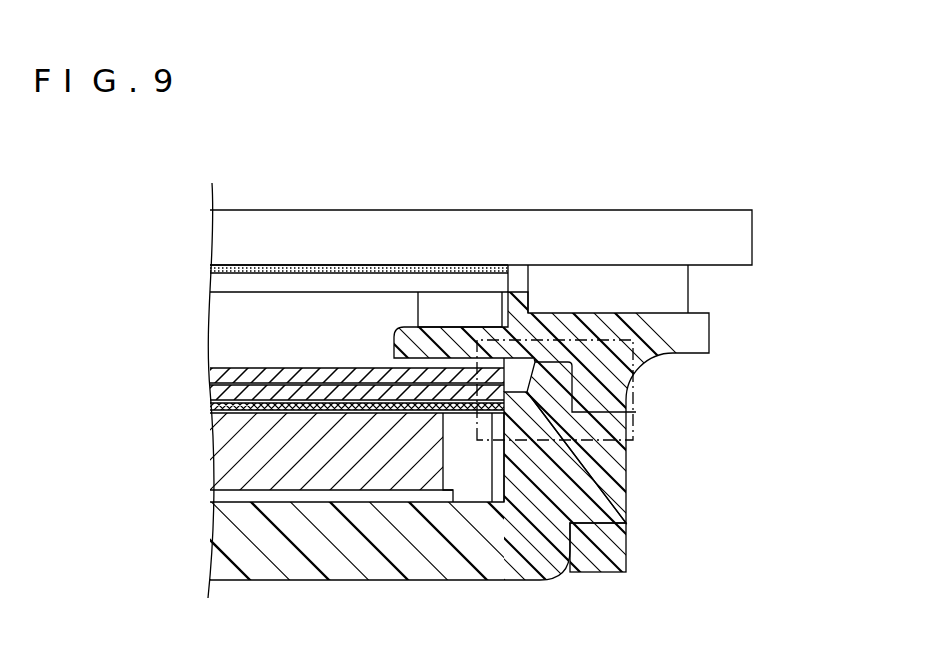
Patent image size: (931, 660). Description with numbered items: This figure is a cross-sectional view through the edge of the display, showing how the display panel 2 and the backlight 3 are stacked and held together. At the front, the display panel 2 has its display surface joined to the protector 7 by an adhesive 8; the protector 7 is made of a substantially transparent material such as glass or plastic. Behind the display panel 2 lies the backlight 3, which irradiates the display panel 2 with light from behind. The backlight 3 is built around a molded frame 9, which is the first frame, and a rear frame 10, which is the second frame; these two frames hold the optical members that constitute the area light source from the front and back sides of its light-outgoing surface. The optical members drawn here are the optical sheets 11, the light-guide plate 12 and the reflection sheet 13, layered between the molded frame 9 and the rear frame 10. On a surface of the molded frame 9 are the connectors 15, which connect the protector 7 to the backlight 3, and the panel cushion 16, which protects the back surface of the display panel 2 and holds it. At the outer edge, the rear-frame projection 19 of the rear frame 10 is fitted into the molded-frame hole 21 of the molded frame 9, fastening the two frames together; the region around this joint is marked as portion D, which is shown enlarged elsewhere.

The protector 7 is at (738, 237).
The adhesive 8 is at (210, 268).
The display panel 2 is at (222, 282).
The panel cushion 16 is at (460, 308).
The connector 15 is at (682, 292).
The molded frame 9 is at (709, 330).
The portion D is at (637, 390).
The molded-frame hole 21 is at (636, 412).
The backlight 3 is at (153, 293).
The optical sheets 11 is at (202, 368).
The light-guide plate 12 is at (226, 452).
The reflection sheet 13 is at (222, 495).
The rear frame 10 is at (227, 548).
The rear-frame projection 19 is at (593, 500).